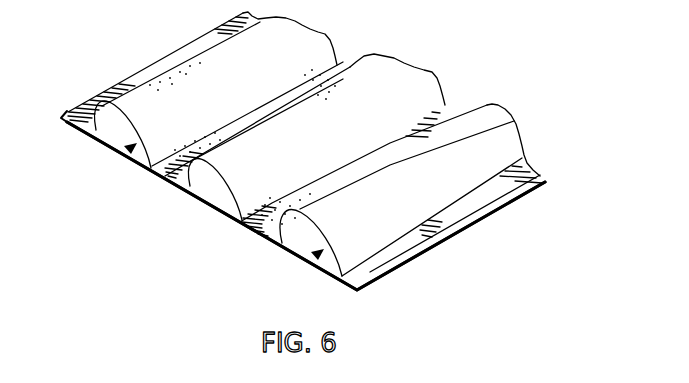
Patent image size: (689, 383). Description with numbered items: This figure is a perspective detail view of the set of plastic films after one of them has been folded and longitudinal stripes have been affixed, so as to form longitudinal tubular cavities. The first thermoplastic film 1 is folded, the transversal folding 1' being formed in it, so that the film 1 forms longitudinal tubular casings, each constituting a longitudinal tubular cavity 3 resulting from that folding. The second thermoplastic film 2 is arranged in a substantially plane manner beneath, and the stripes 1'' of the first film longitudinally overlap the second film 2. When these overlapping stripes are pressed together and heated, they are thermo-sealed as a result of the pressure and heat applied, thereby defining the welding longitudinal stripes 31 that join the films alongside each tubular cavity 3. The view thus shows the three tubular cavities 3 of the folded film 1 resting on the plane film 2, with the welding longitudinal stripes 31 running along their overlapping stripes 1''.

The first thermoplastic film 1 is at (303, 203).
The transversal folding 1' is at (337, 138).
The stripes longitudinally overlapping film 1'' is at (301, 122).
The second thermoplastic film 2 is at (197, 200).
The longitudinal tubular cavity 3 is at (125, 148).
The welding longitudinal stripes 31 is at (113, 107).